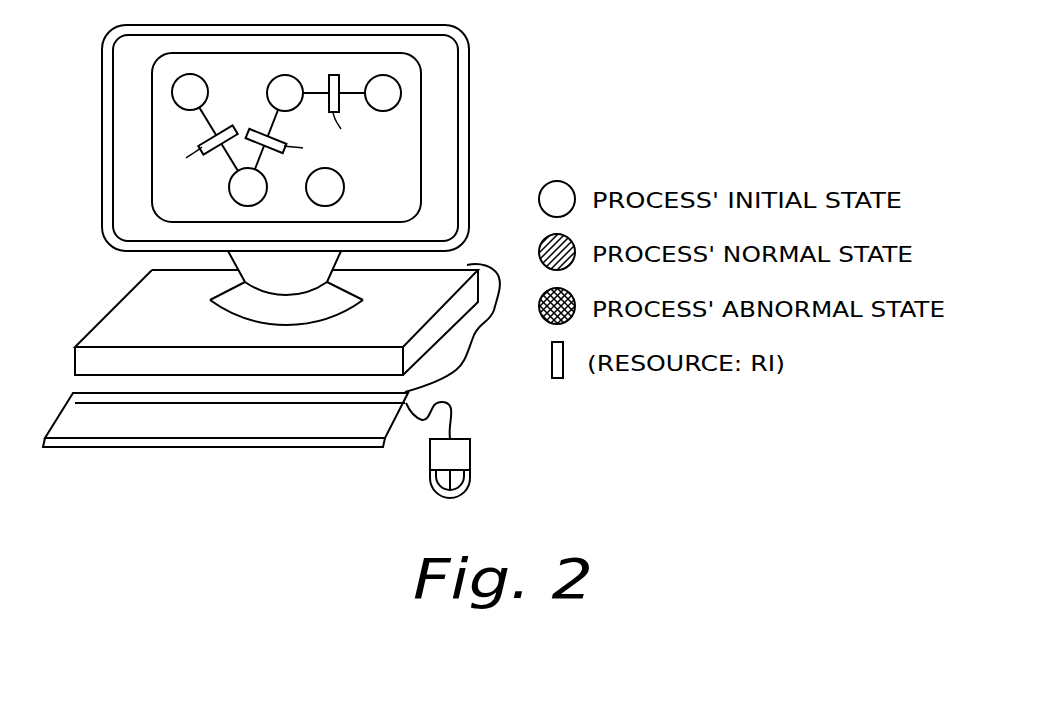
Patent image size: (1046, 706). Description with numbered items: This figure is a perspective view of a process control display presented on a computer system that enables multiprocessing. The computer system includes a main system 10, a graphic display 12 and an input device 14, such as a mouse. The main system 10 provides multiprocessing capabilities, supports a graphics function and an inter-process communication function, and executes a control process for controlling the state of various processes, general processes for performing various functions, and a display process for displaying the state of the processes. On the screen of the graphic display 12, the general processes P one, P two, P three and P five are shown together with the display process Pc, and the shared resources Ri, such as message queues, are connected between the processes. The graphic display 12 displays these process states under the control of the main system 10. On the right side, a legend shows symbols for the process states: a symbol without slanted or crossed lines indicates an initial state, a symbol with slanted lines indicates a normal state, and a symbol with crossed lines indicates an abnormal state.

The main system 10 is at (110, 312).
The graphic display 12 is at (469, 138).
The input device 14 is at (470, 457).